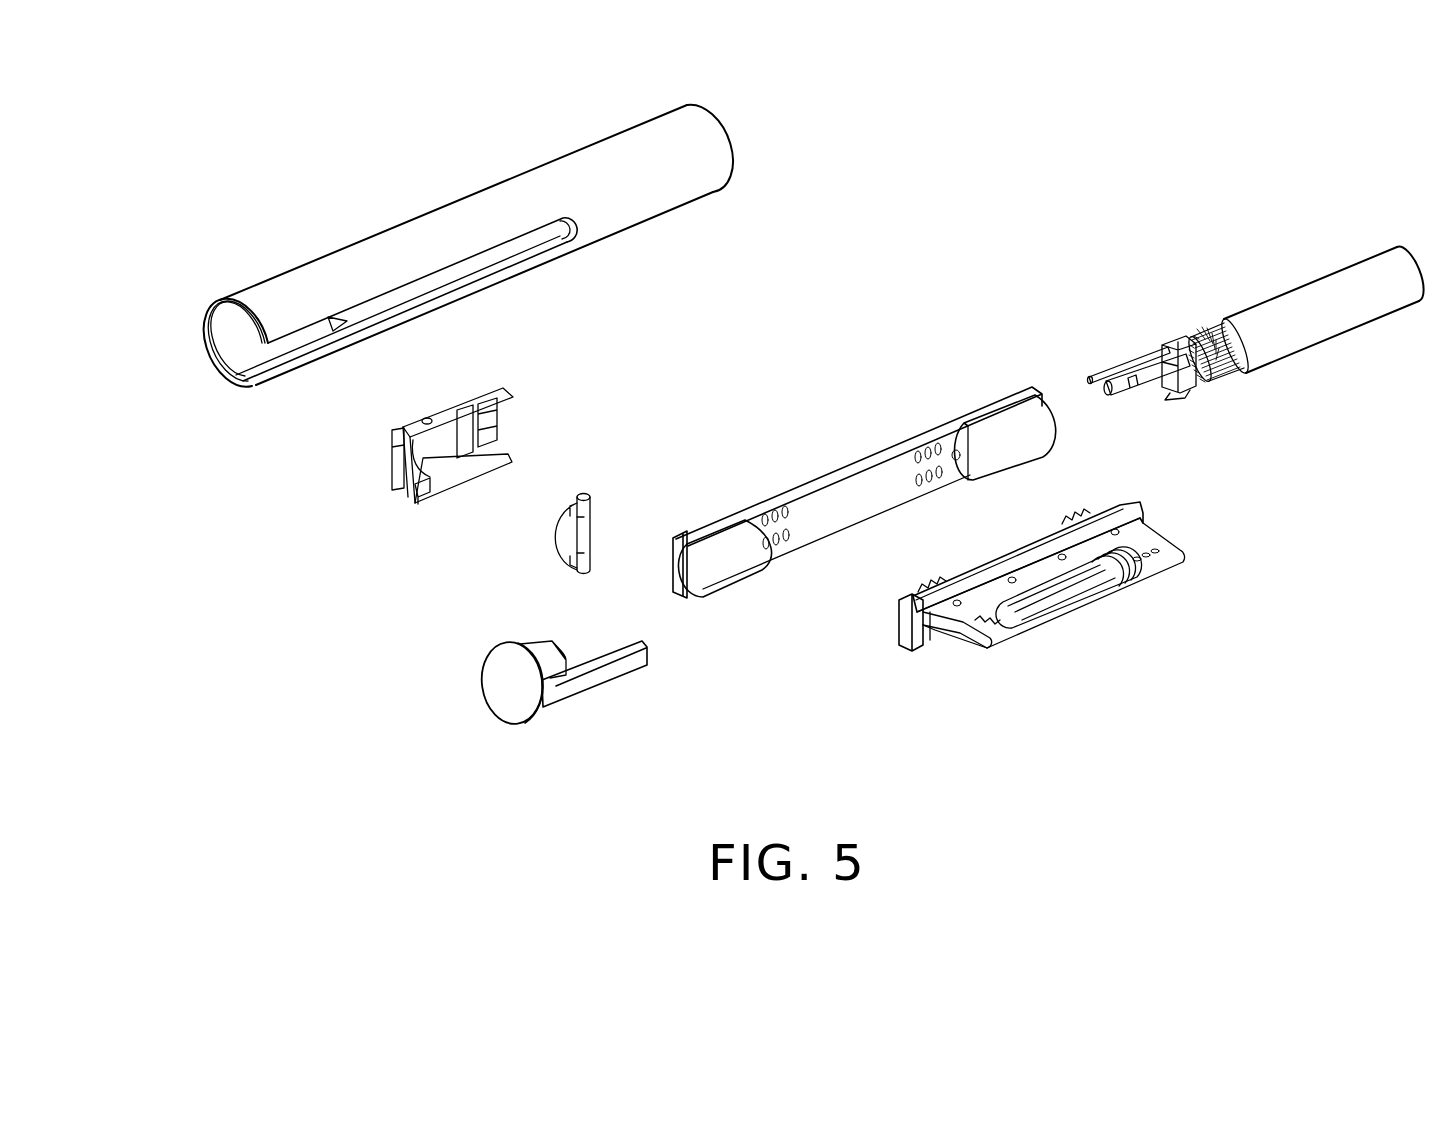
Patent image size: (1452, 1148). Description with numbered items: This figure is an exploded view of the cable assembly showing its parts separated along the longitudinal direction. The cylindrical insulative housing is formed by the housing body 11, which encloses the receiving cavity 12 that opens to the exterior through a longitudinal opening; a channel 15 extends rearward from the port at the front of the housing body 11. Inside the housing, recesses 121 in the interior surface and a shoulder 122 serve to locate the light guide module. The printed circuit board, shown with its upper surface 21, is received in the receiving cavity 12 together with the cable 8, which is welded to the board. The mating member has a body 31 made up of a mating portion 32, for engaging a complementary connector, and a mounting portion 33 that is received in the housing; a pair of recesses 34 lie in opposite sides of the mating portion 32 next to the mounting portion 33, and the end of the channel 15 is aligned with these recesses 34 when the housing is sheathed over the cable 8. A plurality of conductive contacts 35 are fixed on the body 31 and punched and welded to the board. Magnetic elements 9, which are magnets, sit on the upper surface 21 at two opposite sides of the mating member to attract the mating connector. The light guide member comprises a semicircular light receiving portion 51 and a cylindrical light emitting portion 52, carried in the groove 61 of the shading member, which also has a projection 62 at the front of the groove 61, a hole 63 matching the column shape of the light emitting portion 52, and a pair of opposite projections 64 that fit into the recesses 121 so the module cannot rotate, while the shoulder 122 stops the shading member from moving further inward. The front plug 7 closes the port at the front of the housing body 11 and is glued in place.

The housing body 11 is at (648, 207).
The receiving cavity 12 is at (243, 346).
The recesses 121 is at (238, 378).
The shoulder 122 is at (322, 330).
The channel 15 is at (513, 258).
The upper surface 21 is at (855, 493).
The body 31 is at (1048, 570).
The mating portion 32 is at (1178, 574).
The mounting portion 33 is at (906, 620).
The recesses 34 is at (945, 632).
The conductive contacts 35 is at (931, 583).
The light receiving portion 51 is at (563, 527).
The light emitting portion 52 is at (585, 533).
The groove 61 is at (428, 494).
The projection 62 is at (383, 456).
The hole 63 is at (423, 417).
The projections 64 is at (498, 390).
The front plug 7 is at (600, 676).
The cable 8 is at (1295, 310).
The magnetic elements 9 is at (737, 566).